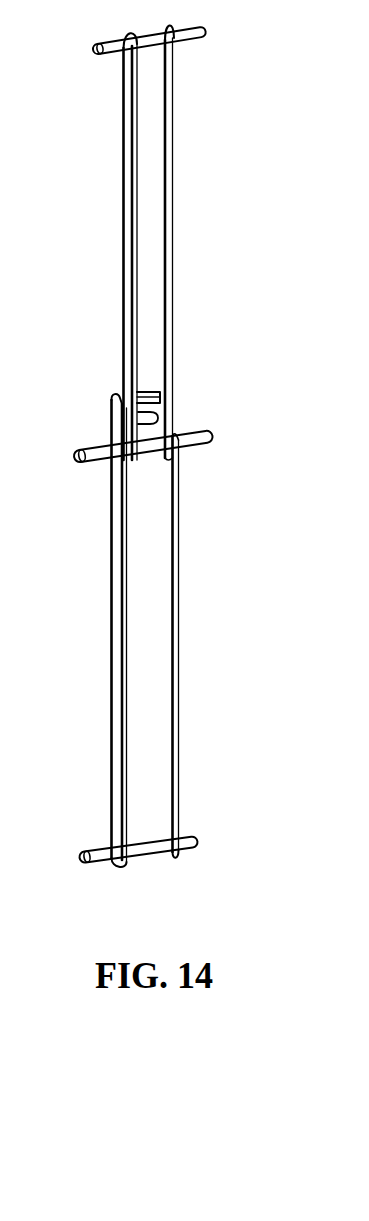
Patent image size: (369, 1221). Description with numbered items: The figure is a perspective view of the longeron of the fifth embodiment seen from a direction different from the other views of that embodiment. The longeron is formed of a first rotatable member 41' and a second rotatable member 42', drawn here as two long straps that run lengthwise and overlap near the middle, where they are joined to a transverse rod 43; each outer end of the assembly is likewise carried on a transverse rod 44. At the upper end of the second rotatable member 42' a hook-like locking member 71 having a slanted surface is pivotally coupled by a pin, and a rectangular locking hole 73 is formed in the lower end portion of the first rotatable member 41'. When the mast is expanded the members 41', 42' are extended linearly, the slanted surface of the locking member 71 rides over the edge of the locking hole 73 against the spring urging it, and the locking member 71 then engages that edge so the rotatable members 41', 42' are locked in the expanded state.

The rod 44 is at (196, 41).
The first rotatable member 41' is at (187, 242).
The second rotatable member 42' is at (180, 630).
The intermediate rod 43 is at (202, 447).
The locking member 71 is at (148, 397).
The locking hole 73 is at (140, 424).